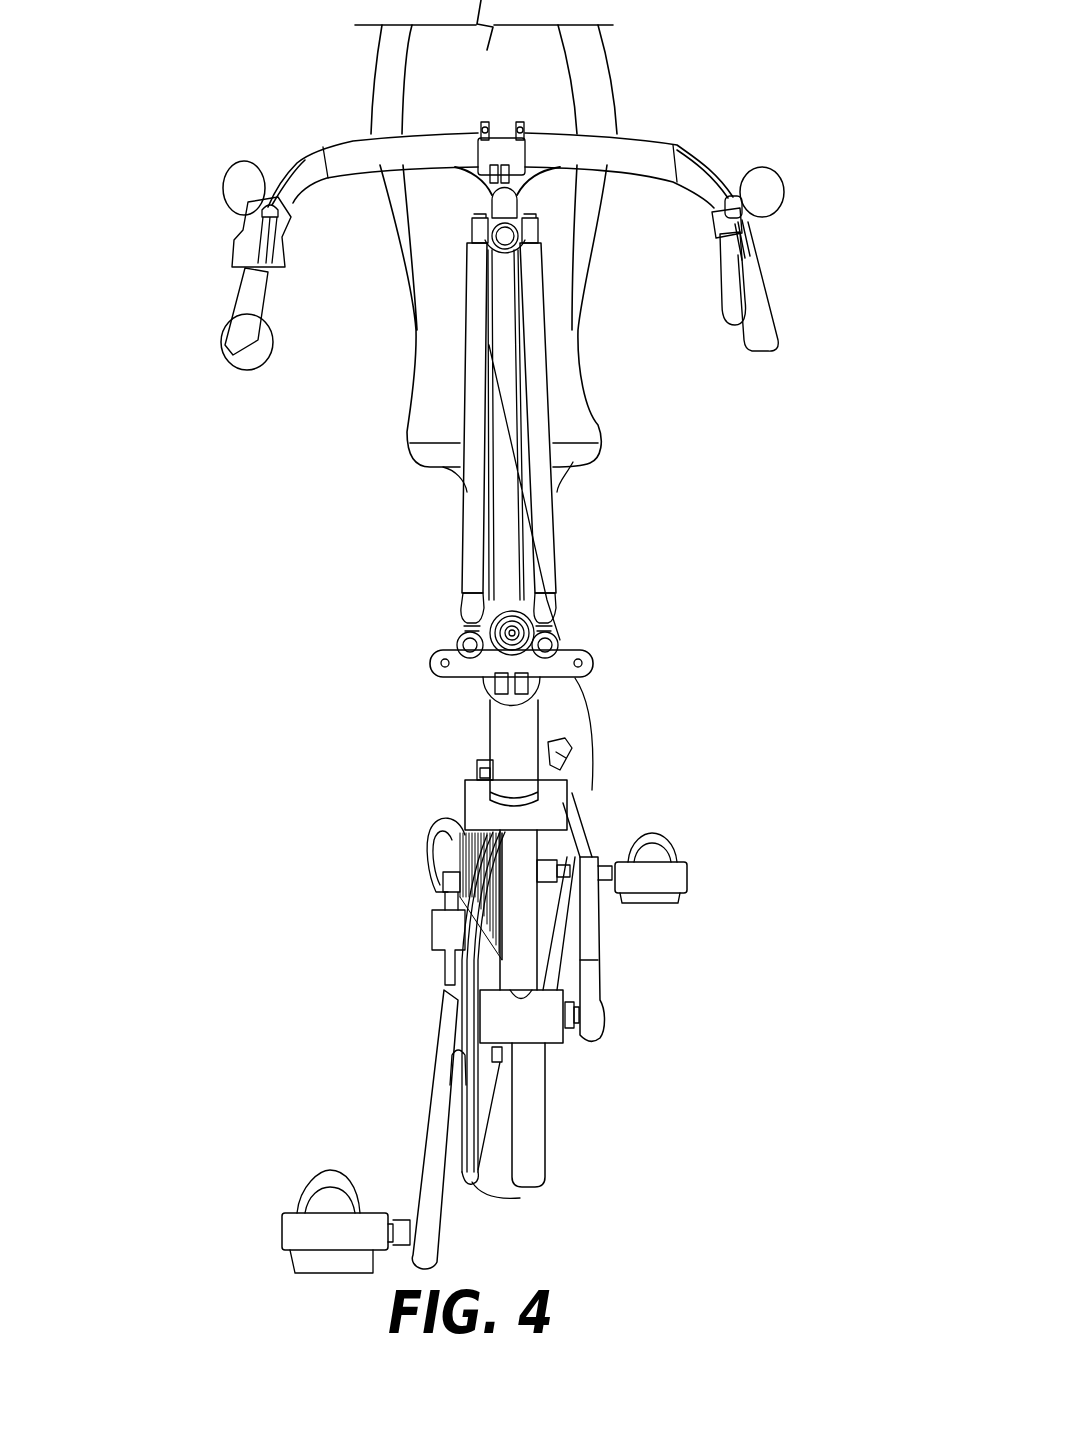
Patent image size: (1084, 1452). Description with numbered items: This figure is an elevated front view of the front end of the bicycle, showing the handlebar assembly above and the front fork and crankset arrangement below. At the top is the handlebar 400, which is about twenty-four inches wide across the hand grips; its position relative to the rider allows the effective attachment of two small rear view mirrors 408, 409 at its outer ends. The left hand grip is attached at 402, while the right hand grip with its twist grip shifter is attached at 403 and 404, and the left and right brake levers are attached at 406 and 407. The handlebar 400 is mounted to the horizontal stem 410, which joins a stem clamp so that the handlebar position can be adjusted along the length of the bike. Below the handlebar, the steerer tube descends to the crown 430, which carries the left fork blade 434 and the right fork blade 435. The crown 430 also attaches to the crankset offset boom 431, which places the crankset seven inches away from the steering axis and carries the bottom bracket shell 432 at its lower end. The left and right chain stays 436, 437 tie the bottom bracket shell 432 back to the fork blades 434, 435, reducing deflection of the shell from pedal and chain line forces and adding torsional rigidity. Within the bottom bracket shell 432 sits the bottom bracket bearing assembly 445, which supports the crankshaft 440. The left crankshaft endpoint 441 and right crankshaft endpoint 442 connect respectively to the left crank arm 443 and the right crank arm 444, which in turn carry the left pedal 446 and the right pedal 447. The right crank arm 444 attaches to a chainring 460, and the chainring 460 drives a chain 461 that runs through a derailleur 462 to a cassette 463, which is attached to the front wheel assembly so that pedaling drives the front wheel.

The handlebar 400 is at (660, 135).
The left hand grip attachment 402 is at (733, 330).
The right hand grip attachment 403 is at (267, 353).
The twist grip shifter attachment 404 is at (273, 287).
The left brake lever attachment 406 is at (772, 307).
The right brake lever attachment 407 is at (235, 325).
The rear view mirror 408 is at (777, 170).
The rear view mirror 409 is at (225, 170).
The horizontal stem 410 is at (500, 137).
The crown 430 is at (473, 780).
The crankset offset boom 431 is at (540, 917).
The bottom bracket shell 432 is at (557, 1050).
The left fork blade 434 is at (590, 812).
The right fork blade 435 is at (460, 812).
The left chain stay 436 is at (563, 962).
The right chain stay 437 is at (487, 970).
The crankshaft 440 is at (577, 1047).
The left crankshaft endpoint 441 is at (610, 1007).
The right crankshaft endpoint 442 is at (447, 1010).
The left crank arm 443 is at (600, 945).
The right crank arm 444 is at (430, 1128).
The bottom bracket bearing assembly 445 is at (577, 1063).
The left pedal 446 is at (680, 848).
The right pedal 447 is at (287, 1215).
The chainring 460 is at (463, 1063).
The chain 461 is at (507, 1187).
The derailleur 462 is at (435, 922).
The cassette 463 is at (467, 870).